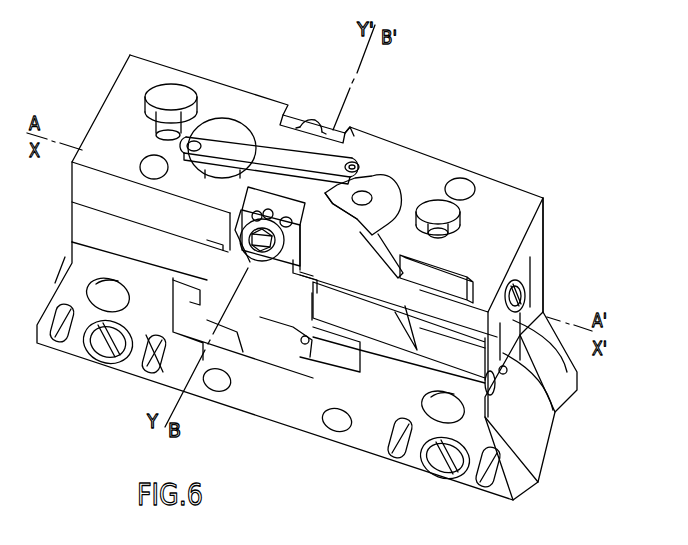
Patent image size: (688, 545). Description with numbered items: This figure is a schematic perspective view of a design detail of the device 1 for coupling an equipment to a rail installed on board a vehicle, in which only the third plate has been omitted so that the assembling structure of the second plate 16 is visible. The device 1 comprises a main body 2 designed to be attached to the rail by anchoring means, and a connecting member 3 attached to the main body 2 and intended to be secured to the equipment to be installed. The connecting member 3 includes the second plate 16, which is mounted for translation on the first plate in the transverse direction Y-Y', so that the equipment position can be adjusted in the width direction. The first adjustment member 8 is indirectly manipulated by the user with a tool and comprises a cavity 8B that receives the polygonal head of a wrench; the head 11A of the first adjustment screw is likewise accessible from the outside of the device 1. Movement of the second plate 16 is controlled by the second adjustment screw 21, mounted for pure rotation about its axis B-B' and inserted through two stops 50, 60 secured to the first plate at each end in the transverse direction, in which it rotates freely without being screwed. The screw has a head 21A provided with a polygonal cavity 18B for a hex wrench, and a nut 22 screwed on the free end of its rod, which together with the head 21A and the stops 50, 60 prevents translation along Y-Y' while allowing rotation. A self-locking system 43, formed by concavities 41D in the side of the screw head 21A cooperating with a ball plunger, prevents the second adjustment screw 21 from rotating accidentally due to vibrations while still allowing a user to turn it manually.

The device 1 is at (469, 116).
The main body 2 is at (78, 261).
The connecting member 3 is at (570, 190).
The first adjustment member 8 is at (527, 285).
The cavity 8B is at (557, 363).
The head 11A is at (557, 412).
The second plate 16 is at (557, 196).
The polygonal cavity 18B is at (262, 252).
The second adjustment screw 21 is at (273, 268).
The head 21A is at (157, 368).
The nut 22 is at (340, 128).
The concavities 41D is at (250, 215).
The self-locking system 43 is at (300, 220).
The stop 50 is at (268, 197).
The stop 60 is at (298, 135).